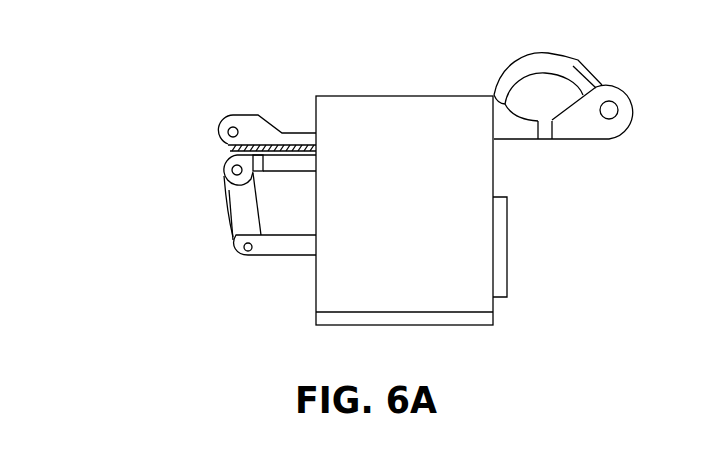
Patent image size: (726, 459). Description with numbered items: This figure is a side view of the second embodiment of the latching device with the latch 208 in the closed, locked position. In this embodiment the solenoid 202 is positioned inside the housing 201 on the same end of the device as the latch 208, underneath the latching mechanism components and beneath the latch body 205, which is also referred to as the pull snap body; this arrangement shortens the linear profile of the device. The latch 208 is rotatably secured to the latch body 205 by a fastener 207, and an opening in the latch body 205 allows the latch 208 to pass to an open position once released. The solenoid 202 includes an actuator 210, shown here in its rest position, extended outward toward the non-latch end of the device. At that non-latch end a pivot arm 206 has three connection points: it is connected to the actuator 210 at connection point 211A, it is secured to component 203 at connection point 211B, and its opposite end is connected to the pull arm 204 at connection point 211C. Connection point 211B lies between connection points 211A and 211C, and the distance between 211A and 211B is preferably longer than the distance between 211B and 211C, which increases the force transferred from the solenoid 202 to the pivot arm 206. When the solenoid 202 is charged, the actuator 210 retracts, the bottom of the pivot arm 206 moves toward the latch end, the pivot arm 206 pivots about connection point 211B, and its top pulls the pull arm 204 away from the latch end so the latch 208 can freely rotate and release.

The housing 201 is at (460, 252).
The solenoid 202 is at (502, 232).
The component at non-latch end 203 is at (280, 176).
The pull arm 204 is at (272, 118).
The latch body 205 is at (585, 132).
The pivot arm 206 is at (232, 229).
The fastener 207 is at (616, 111).
The latch 208 is at (557, 63).
The actuator 210 is at (283, 255).
The connection point 211A is at (233, 259).
The connection point 211B is at (225, 168).
The connection point 211C is at (223, 133).